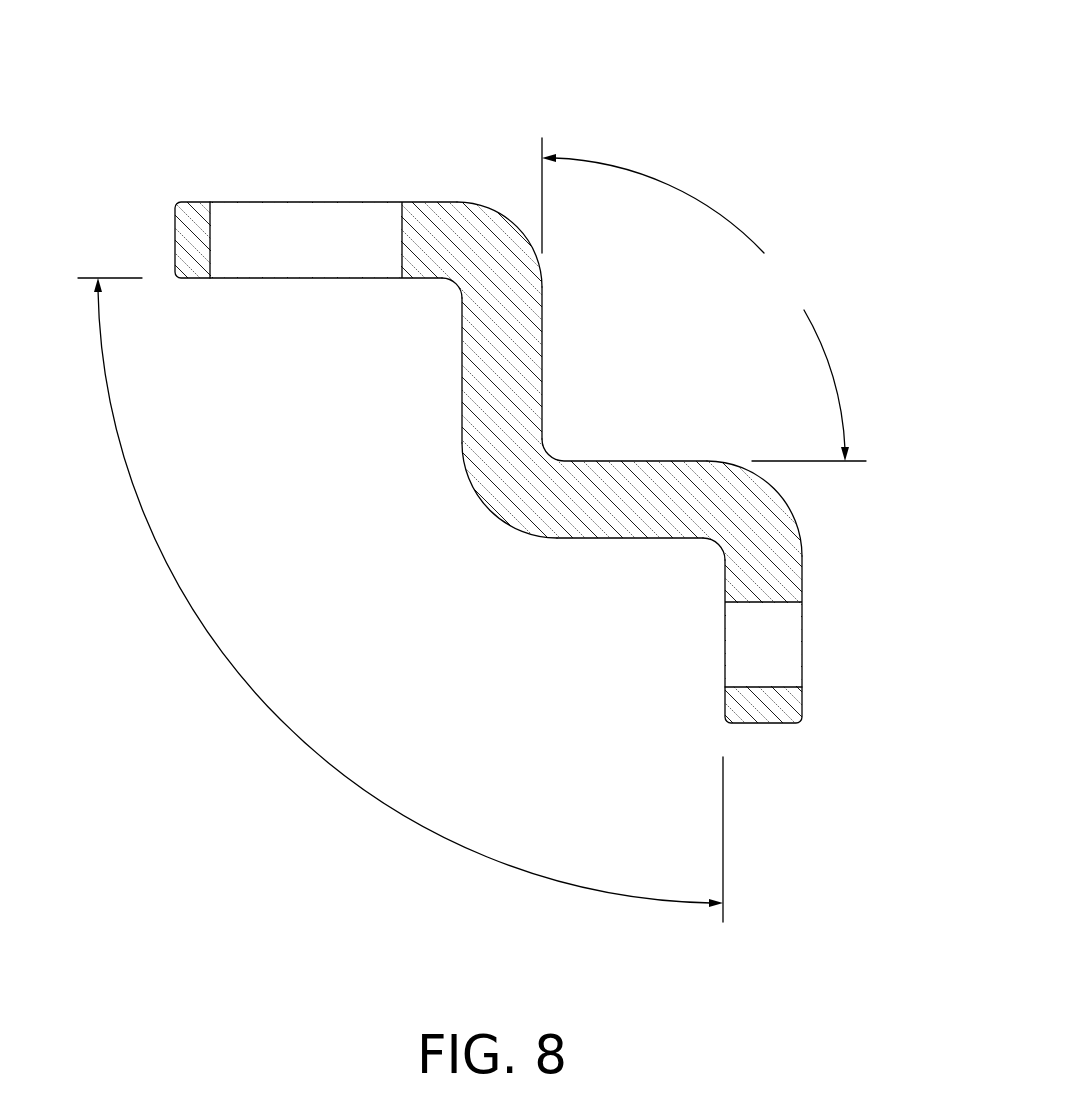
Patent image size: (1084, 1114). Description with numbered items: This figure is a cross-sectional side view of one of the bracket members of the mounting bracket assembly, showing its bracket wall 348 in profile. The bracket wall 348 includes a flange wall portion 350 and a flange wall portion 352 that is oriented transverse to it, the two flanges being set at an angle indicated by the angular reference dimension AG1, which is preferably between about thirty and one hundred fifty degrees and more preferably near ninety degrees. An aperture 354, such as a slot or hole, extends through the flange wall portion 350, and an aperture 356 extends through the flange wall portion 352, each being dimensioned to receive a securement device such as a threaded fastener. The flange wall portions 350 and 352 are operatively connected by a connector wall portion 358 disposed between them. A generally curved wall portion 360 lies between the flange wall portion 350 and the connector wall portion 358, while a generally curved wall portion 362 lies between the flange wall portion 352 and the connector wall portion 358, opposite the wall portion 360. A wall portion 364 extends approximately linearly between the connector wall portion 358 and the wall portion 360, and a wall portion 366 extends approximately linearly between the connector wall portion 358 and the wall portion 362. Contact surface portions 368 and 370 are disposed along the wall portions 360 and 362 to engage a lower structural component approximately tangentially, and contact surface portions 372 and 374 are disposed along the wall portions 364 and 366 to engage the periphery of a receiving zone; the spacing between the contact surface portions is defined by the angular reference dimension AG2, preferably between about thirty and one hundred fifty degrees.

The bracket wall 348 is at (468, 461).
The flange wall portion 350 is at (763, 708).
The flange wall portion 352 is at (193, 238).
The aperture 354 is at (800, 647).
The aperture 356 is at (300, 190).
The connector wall portion 358 is at (527, 472).
The wall portion 360 is at (733, 520).
The wall portion 362 is at (477, 265).
The wall portion 364 is at (634, 497).
The wall portion 366 is at (502, 365).
The contact surface portion 368 is at (776, 486).
The contact surface portion 370 is at (518, 222).
The contact surface portion 372 is at (640, 461).
The contact surface portion 374 is at (543, 328).
The angular reference dimension AG1 is at (400, 600).
The angular reference dimension AG2 is at (704, 299).